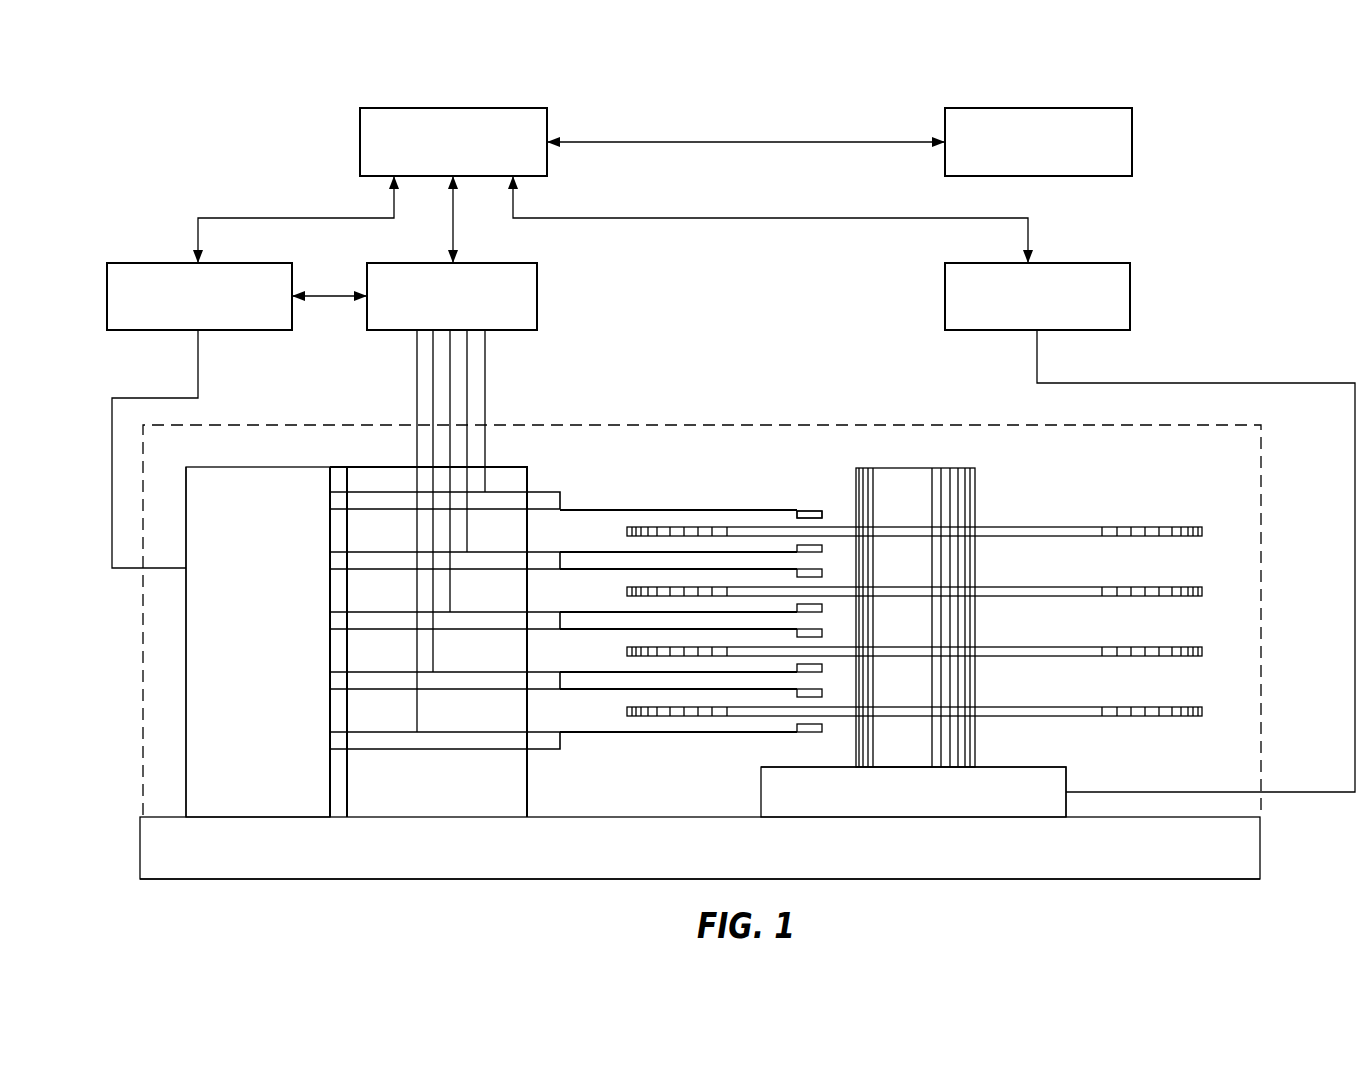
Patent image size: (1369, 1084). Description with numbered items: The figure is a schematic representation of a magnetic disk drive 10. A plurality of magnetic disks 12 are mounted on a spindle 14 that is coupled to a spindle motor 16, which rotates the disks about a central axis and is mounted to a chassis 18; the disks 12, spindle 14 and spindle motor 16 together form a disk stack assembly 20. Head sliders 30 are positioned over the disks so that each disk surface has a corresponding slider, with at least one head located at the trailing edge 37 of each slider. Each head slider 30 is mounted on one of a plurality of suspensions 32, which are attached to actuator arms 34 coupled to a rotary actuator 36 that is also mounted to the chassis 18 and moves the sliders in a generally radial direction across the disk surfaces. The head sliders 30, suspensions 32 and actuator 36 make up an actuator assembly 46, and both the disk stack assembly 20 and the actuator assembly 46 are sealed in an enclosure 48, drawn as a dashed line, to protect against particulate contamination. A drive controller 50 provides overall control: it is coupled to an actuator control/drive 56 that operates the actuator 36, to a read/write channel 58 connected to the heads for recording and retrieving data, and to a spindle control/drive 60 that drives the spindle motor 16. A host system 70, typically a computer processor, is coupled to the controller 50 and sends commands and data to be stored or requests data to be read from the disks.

The magnetic disk drive 10 is at (282, 902).
The magnetic disks 12 is at (1187, 537).
The spindle 14 is at (976, 495).
The spindle motor 16 is at (1052, 766).
The chassis 18 is at (1256, 862).
The disk stack assembly 20 is at (913, 792).
The head sliders 30 is at (798, 547).
The suspensions 32 is at (620, 610).
The actuator arms 34 is at (512, 742).
The rotary actuator 36 is at (258, 642).
The trailing edge 37 is at (822, 516).
The actuator assembly 46 is at (192, 757).
The enclosure 48 is at (143, 666).
The drive controller 50 is at (360, 158).
The actuator control/drive 56 is at (120, 263).
The read/write channel 58 is at (538, 318).
The spindle control/drive 60 is at (1131, 312).
The host system 70 is at (1133, 158).